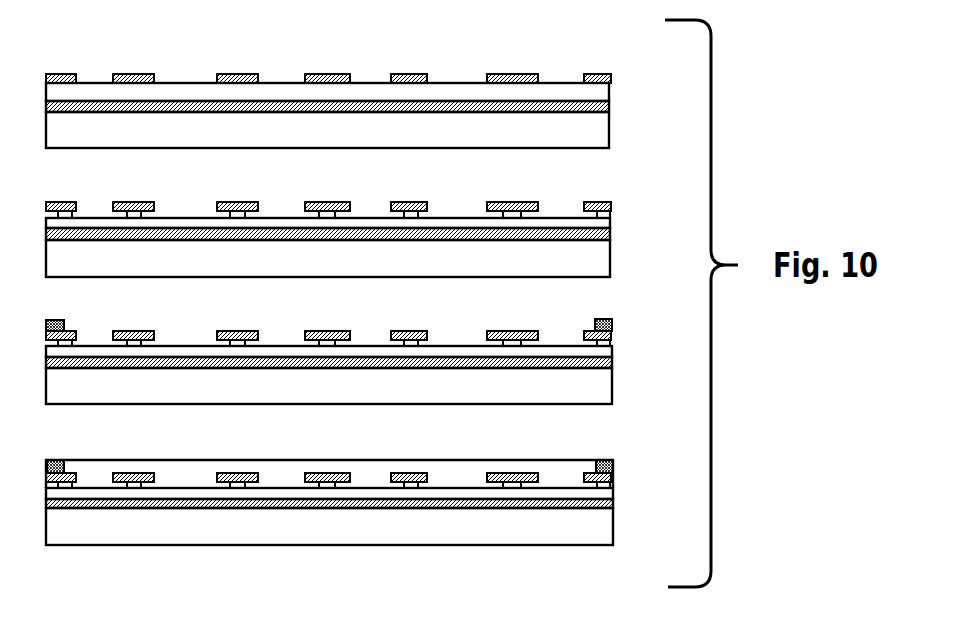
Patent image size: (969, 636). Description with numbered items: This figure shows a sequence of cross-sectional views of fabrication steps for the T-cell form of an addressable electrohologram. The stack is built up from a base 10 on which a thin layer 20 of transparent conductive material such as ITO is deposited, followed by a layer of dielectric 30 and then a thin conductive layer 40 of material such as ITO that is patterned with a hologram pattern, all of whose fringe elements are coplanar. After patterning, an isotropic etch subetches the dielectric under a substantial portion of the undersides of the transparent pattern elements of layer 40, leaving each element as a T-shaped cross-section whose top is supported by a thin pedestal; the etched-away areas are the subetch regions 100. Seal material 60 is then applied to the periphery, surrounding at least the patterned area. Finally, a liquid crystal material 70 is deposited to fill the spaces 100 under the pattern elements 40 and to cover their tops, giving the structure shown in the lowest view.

The substrate 10 is at (627, 533).
The thin layer of transparent conductive material 20 is at (630, 505).
The layer of dielectric 30 is at (642, 483).
The thin conductive layer 40 is at (657, 457).
The seal material 60 is at (603, 458).
The liquid crystal material 70 is at (465, 475).
The subetch regions 100 is at (415, 215).